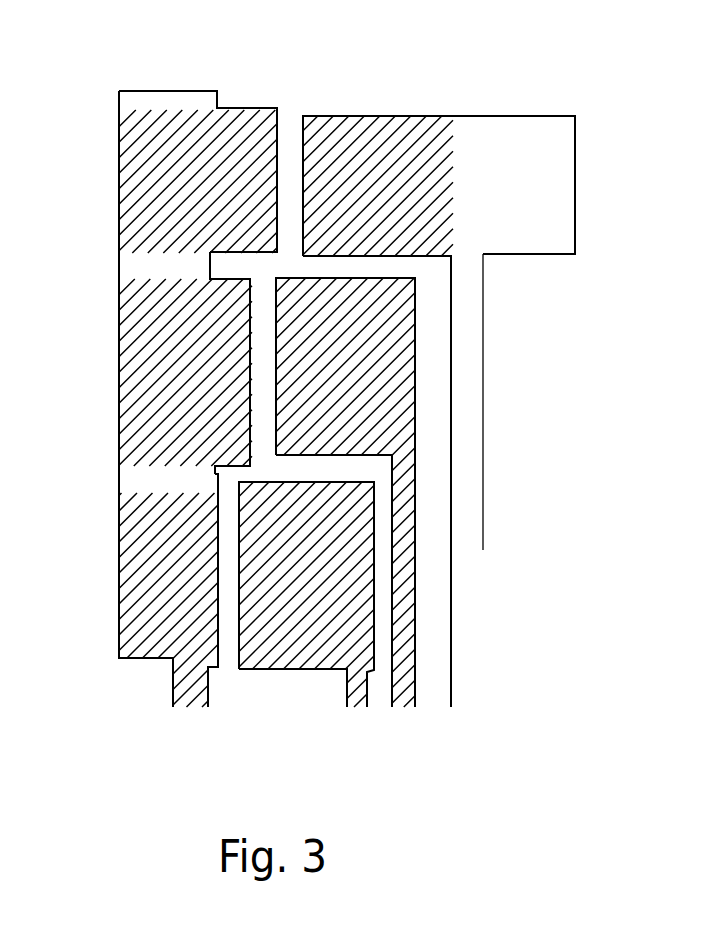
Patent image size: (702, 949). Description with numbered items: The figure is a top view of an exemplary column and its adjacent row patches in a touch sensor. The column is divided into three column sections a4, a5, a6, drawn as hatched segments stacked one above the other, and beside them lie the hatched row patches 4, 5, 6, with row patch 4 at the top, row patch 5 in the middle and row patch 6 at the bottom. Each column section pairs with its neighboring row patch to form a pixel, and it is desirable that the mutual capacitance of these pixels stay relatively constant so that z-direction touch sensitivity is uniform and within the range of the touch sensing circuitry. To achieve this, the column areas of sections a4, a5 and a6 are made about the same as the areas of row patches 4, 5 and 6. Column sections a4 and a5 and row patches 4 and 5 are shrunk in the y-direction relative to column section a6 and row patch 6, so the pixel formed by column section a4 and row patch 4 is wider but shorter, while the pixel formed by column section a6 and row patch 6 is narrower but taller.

The column section a4 is at (153, 202).
The column section a5 is at (163, 382).
The column section a6 is at (152, 577).
The row patch 4 is at (362, 156).
The row patch 5 is at (370, 383).
The row patch 6 is at (325, 613).